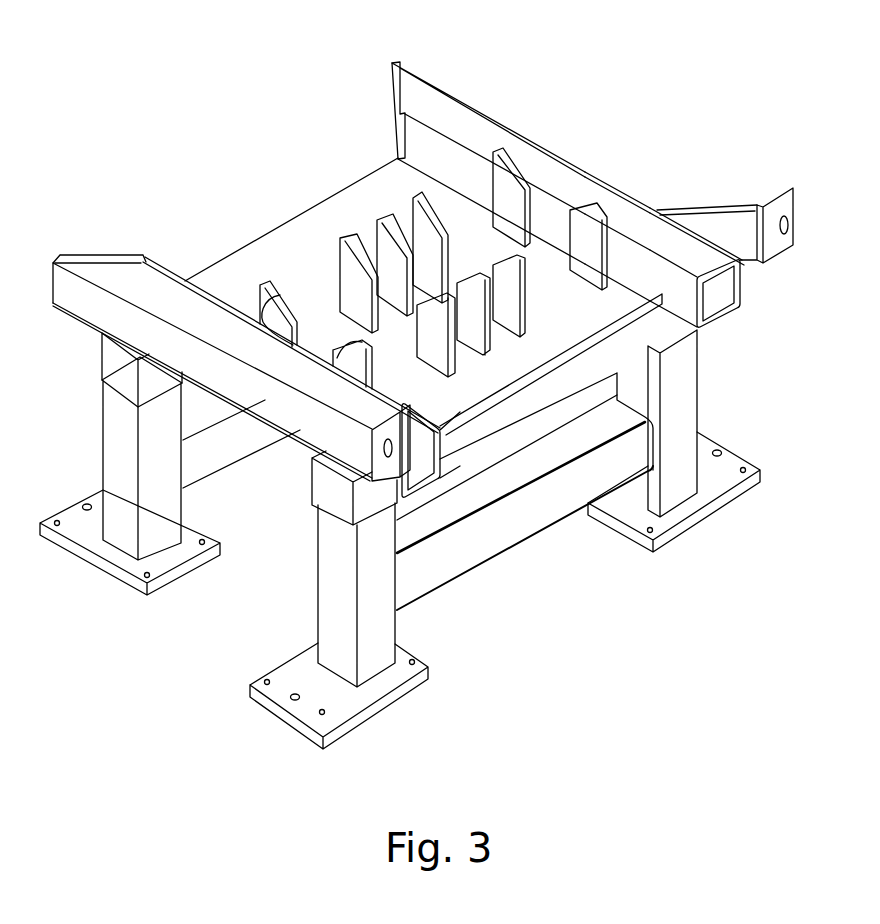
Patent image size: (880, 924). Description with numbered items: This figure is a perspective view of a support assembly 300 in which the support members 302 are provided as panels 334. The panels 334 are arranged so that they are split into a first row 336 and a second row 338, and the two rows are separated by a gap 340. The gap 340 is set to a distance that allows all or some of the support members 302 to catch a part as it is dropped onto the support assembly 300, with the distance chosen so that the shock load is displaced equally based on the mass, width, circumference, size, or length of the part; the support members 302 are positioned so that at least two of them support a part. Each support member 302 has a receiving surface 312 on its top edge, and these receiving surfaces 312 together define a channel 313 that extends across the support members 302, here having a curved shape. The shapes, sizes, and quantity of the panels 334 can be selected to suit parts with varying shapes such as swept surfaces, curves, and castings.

The support assembly 300 is at (217, 110).
The support members 302 is at (385, 217).
The receiving surfaces 312 is at (446, 222).
The channel 313 is at (290, 345).
The panels 334 is at (338, 265).
The first row 336 is at (577, 149).
The gap 340 is at (608, 170).
The second row 338 is at (657, 197).